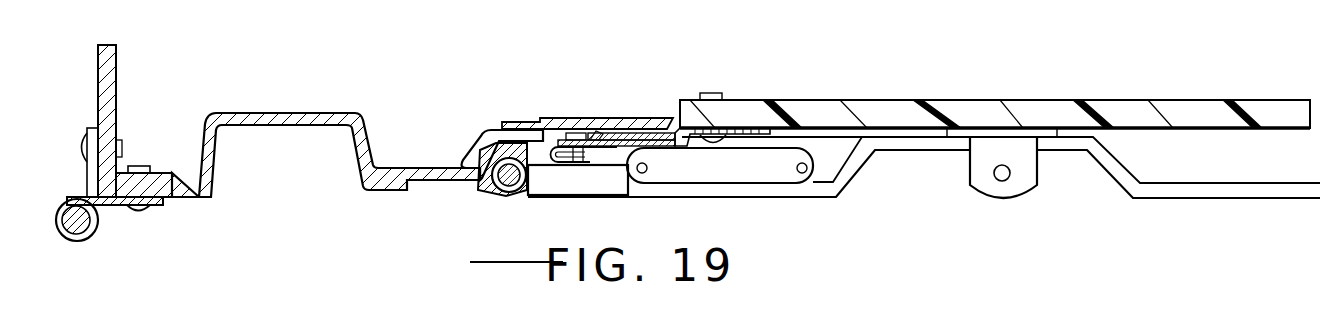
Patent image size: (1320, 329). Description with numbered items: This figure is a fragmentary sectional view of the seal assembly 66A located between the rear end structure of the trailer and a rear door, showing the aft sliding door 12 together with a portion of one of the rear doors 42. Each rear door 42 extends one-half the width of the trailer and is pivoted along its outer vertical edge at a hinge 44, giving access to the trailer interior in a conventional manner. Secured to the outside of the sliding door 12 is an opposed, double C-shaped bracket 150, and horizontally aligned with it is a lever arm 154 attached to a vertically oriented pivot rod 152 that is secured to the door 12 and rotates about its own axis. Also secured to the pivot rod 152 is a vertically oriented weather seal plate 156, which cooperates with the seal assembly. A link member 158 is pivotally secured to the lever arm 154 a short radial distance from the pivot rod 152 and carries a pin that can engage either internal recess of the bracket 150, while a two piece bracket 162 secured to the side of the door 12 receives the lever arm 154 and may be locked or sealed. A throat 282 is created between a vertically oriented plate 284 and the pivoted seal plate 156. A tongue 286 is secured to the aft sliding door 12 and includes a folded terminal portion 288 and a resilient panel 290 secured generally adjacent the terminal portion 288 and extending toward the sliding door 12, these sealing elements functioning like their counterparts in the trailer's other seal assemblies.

The sliding door 12 is at (1070, 92).
The rear door 42 is at (98, 80).
The hinge 44 is at (80, 243).
The seal assembly 66A is at (583, 106).
The double C-shaped bracket 150 is at (720, 148).
The pivot rod 152 is at (495, 193).
The lever arm 154 is at (878, 177).
The weather seal plate 156 is at (576, 195).
The link member 158 is at (743, 172).
The two piece bracket 162 is at (992, 150).
The throat 282 is at (527, 150).
The vertically oriented plate 284 is at (545, 117).
The tongue 286 is at (612, 150).
The folded terminal portion 288 is at (538, 195).
The resilient panel 290 is at (650, 125).